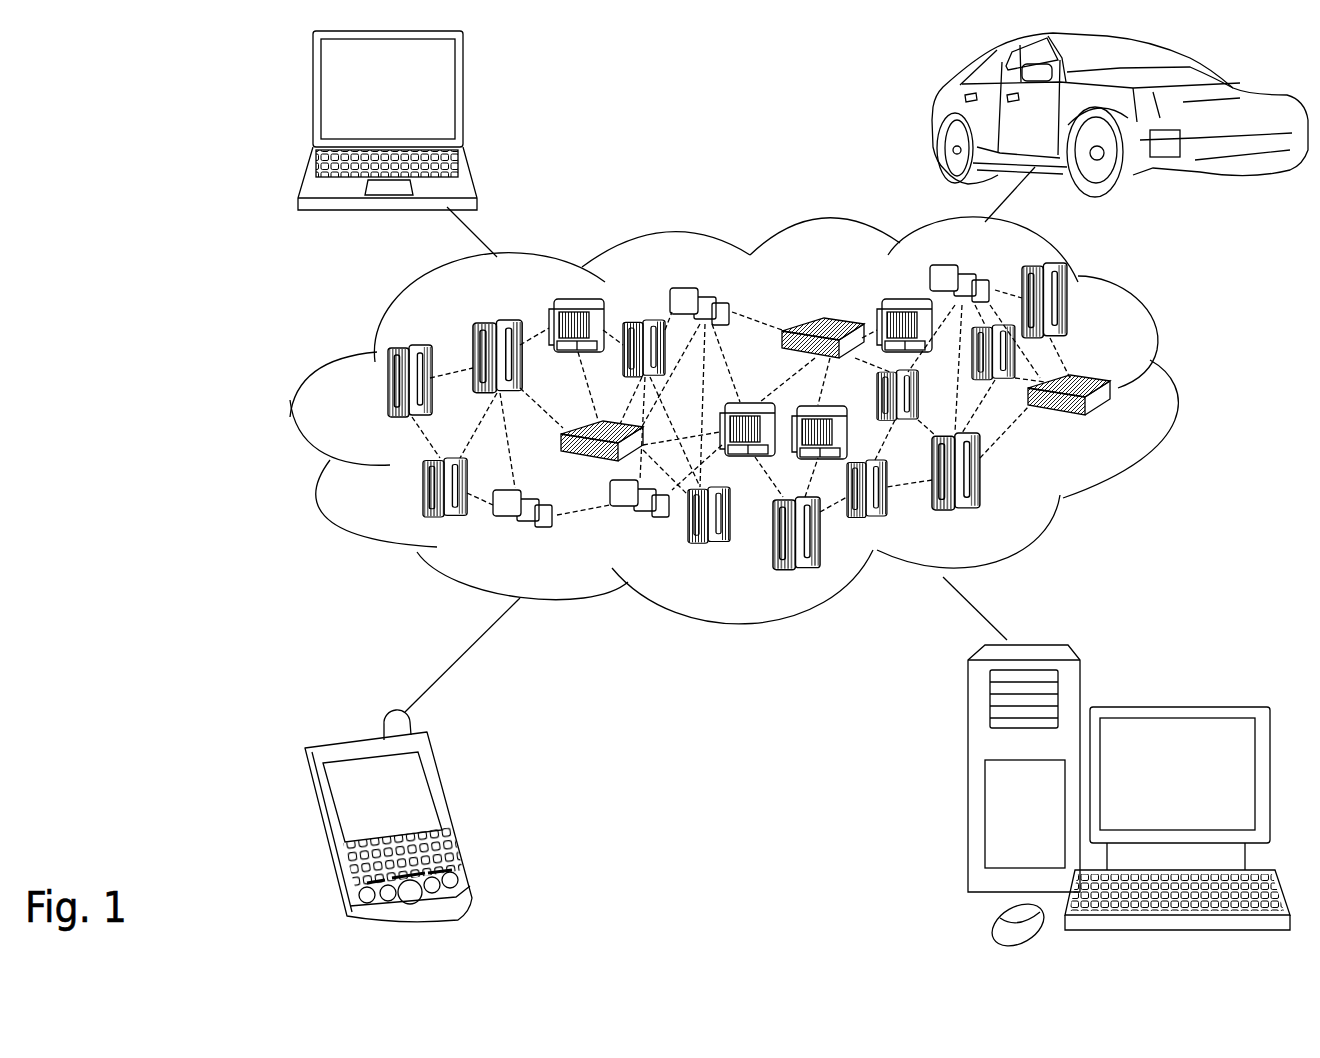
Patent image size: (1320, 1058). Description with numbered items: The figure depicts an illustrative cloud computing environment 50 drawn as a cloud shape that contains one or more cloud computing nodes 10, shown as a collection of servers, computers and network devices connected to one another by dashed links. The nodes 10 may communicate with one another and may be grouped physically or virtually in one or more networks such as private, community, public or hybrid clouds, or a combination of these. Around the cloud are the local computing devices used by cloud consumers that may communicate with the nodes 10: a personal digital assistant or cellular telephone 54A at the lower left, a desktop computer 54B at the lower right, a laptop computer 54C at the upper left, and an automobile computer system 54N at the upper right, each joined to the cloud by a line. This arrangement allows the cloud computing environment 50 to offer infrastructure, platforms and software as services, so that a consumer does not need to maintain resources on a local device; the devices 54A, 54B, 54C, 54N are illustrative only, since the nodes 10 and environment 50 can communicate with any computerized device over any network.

The cloud computing nodes 10 is at (1110, 426).
The cloud computing environment 50 is at (1178, 390).
The personal digital assistant (PDA) or cellular telephone 54A is at (452, 808).
The desktop computer 54B is at (1172, 705).
The laptop computer 54C is at (462, 99).
The automobile computer system 54N is at (938, 117).